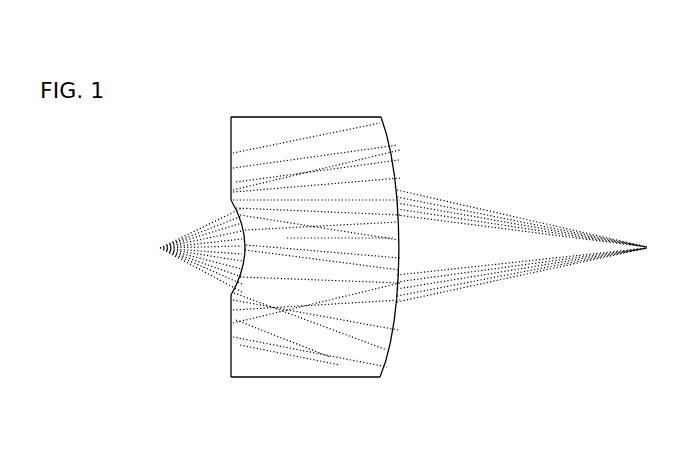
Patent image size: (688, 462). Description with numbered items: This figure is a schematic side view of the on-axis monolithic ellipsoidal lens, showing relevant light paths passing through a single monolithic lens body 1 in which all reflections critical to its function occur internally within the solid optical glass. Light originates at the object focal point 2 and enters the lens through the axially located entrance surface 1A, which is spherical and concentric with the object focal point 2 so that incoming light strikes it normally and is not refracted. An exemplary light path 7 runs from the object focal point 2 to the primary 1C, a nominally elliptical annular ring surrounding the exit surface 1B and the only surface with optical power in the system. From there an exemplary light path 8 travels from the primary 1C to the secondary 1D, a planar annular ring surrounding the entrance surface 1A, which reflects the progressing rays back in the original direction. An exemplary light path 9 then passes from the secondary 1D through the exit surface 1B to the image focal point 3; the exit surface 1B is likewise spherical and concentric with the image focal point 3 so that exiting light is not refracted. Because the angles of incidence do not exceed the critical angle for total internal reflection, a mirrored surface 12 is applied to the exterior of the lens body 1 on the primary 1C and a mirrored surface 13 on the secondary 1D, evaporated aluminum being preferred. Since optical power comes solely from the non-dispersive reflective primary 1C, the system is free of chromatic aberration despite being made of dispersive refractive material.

The monolithic lens body 1 is at (308, 236).
The entrance surface 1A is at (243, 270).
The exit surface 1B is at (397, 230).
The primary 1C is at (394, 155).
The secondary 1D is at (230, 331).
The object focal point 2 is at (160, 248).
The image focal point 3 is at (647, 247).
The light path from object focal point to primary 7 is at (340, 350).
The light path from primary to secondary 8 is at (313, 133).
The light path from secondary to image focal point 9 is at (472, 286).
The mirrored surface of primary 12 is at (390, 338).
The mirrored surface of secondary 13 is at (233, 153).